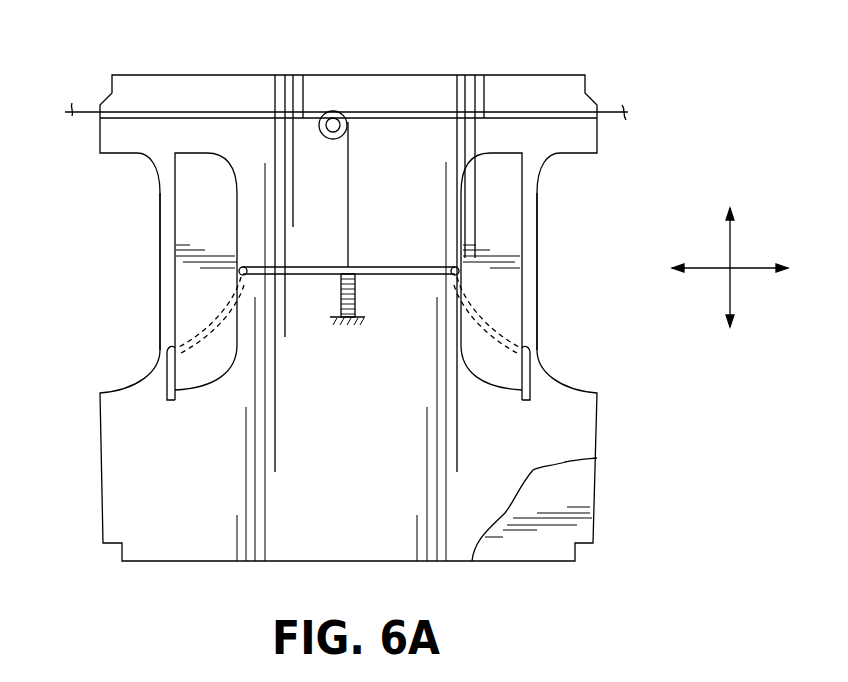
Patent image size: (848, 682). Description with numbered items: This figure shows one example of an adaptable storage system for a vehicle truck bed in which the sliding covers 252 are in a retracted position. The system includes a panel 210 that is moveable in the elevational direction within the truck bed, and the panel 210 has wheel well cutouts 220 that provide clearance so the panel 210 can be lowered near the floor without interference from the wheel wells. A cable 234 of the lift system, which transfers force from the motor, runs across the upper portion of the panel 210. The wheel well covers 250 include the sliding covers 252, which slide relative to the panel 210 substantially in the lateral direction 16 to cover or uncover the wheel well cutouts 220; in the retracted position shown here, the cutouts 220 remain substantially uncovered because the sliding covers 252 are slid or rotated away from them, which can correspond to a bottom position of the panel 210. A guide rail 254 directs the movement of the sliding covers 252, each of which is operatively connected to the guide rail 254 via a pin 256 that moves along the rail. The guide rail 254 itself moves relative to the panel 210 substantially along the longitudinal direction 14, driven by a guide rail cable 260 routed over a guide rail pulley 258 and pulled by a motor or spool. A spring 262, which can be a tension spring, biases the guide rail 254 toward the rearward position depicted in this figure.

The longitudinal direction 14 is at (732, 290).
The lateral direction 16 is at (752, 266).
The panel 210 is at (535, 98).
The wheel well cutout 220 is at (125, 198).
The cable 234 is at (612, 113).
The wheel well cover 250 is at (207, 227).
The sliding cover 252 is at (197, 292).
The guide rail 254 is at (298, 276).
The pin 256 is at (246, 266).
The guide rail pulley 258 is at (333, 110).
The guide rail cable 260 is at (348, 153).
The spring 262 is at (356, 292).